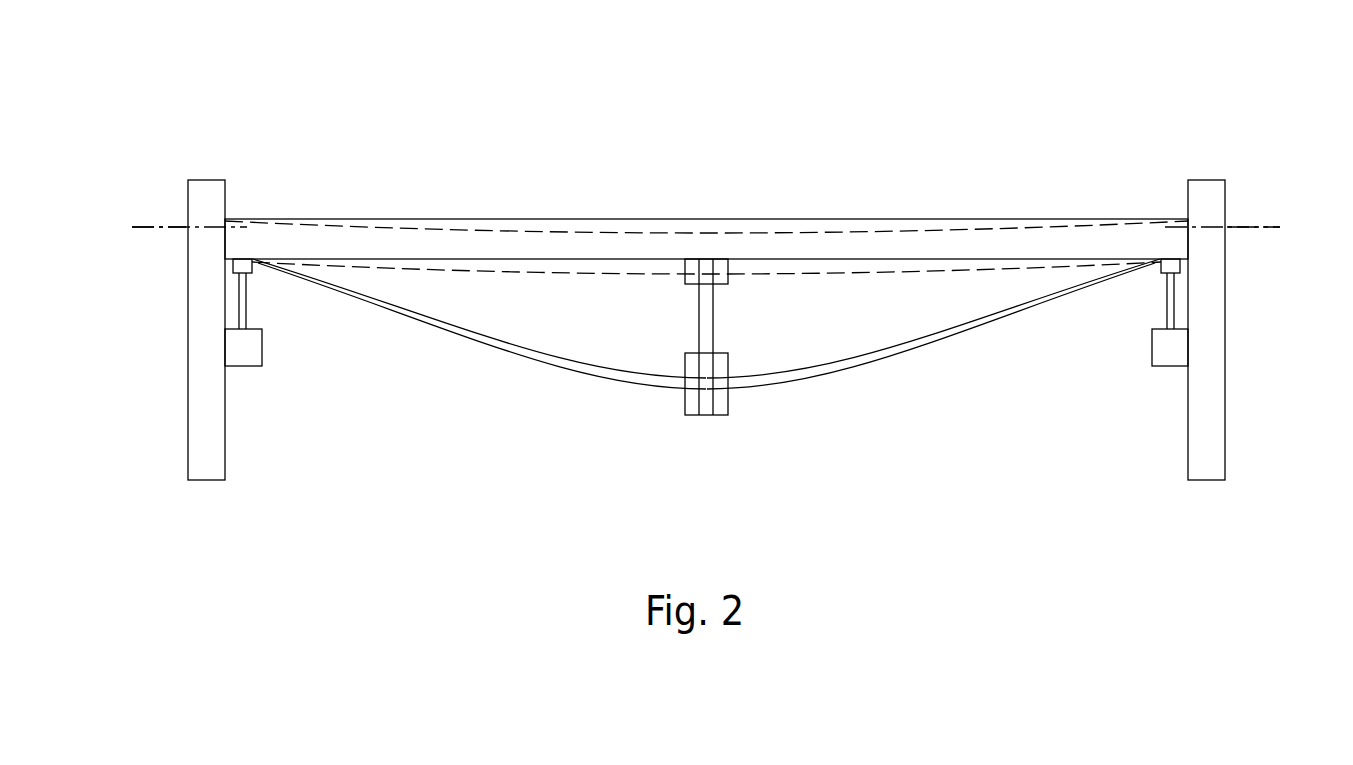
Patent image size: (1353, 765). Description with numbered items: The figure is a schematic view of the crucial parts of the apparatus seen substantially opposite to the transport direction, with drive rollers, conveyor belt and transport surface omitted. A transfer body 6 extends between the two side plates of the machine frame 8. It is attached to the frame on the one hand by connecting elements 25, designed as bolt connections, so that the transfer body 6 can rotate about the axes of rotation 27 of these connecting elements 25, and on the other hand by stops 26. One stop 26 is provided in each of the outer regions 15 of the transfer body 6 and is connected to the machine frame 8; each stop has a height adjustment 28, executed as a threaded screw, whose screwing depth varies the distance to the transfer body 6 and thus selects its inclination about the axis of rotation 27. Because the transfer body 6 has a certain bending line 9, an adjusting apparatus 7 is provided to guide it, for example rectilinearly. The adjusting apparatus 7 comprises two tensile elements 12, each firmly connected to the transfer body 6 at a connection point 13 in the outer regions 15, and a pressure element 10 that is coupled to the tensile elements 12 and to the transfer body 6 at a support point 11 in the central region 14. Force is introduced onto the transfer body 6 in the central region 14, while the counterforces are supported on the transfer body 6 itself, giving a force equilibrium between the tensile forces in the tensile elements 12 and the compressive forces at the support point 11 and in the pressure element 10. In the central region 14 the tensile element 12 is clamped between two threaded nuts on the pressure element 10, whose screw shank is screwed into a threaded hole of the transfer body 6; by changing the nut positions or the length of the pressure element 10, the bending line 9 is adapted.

The transfer body 6 is at (937, 247).
The adjusting apparatus 7 is at (663, 411).
The machine frame 8 is at (212, 433).
The bending line 9 is at (543, 233).
The pressure element 10 is at (703, 330).
The support point 11 is at (707, 257).
The tensile element 12 is at (522, 346).
The connection point 13 is at (283, 257).
The central region 14 is at (707, 208).
The outer region 15 is at (255, 203).
The connecting element 25 is at (202, 226).
The stop 26 is at (253, 265).
The axis of rotation 27 is at (147, 230).
The height adjustment 28 is at (242, 307).